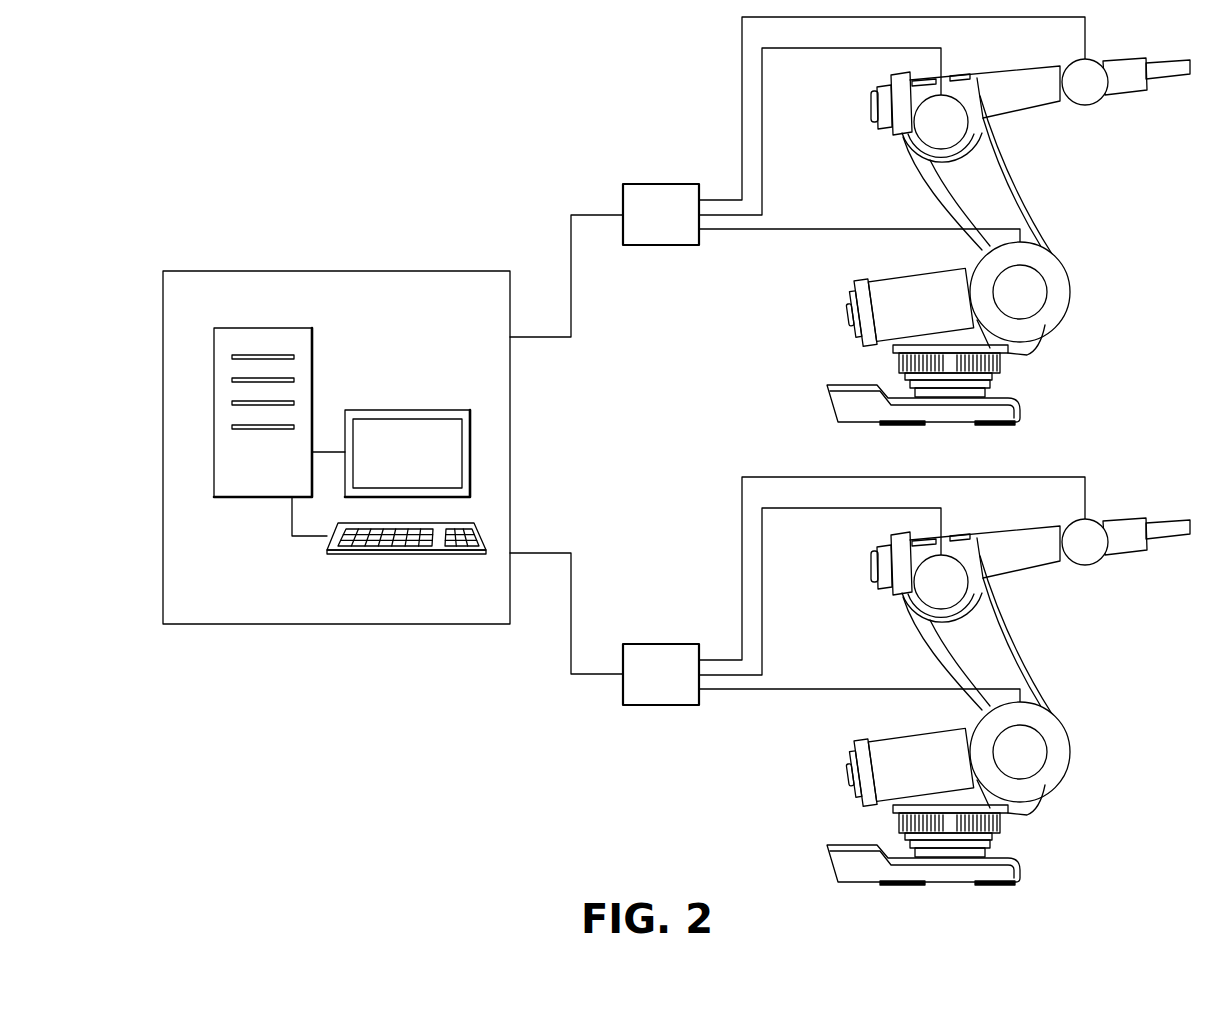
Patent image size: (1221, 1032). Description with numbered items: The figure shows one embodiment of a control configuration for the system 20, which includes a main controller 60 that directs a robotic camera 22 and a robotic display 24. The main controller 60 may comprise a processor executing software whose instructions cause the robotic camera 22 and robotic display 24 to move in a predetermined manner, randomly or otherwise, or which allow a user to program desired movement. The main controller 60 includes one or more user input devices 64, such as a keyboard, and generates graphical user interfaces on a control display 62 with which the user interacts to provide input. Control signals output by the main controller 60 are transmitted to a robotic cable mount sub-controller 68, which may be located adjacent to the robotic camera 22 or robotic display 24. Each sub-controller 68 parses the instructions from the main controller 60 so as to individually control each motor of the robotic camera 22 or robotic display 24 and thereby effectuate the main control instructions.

The system 20 is at (676, 451).
The robotic camera 22 is at (1112, 313).
The robotic display 24 is at (1112, 773).
The main controller 60 is at (336, 416).
The control display 62 is at (406, 410).
The user input device 64 is at (425, 553).
The robotic cable mount sub-controller 68 is at (655, 184).